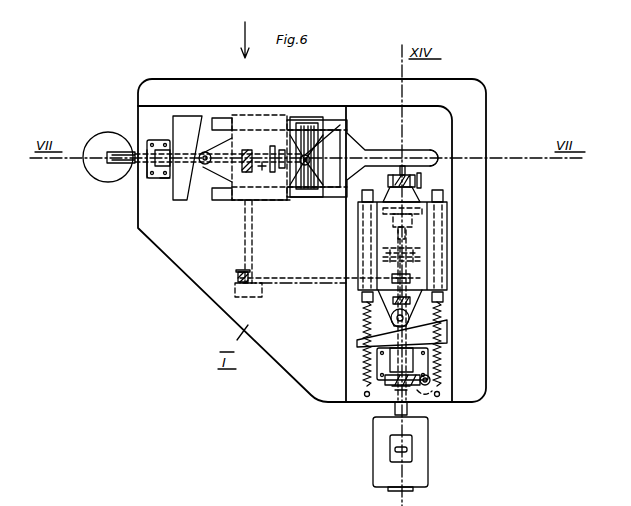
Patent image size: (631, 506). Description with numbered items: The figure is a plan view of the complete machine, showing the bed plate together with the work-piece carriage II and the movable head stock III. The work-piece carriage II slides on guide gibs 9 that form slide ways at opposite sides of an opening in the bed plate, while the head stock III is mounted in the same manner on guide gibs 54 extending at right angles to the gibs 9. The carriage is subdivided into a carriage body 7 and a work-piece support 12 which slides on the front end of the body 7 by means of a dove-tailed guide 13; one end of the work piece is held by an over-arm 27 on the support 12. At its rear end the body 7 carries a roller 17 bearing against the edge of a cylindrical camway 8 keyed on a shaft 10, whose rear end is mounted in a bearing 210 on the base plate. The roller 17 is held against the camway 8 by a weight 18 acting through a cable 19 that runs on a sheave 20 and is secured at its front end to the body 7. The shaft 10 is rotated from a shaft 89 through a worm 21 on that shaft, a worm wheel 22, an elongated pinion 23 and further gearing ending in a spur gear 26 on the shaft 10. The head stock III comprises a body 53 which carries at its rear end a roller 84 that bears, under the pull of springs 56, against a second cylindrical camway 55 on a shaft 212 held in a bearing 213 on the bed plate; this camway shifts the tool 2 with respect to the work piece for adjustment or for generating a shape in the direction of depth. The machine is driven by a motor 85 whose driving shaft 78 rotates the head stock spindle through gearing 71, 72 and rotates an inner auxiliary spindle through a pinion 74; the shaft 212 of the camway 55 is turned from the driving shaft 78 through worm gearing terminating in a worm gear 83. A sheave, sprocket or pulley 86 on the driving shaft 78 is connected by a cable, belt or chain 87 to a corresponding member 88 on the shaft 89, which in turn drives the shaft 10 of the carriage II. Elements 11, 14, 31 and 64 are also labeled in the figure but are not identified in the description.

The tool 2 is at (406, 172).
The carriage body 7 is at (275, 200).
The cylindrical camway 8 is at (187, 202).
The guide gibs 9 is at (227, 202).
The shaft 10 is at (142, 153).
The clamping jaw 11 is at (308, 120).
The work-piece support 12 is at (338, 140).
The dove-tailed guide 13 is at (295, 117).
The pivot 14 is at (304, 200).
The roller 17 is at (207, 150).
The weight 18 is at (110, 182).
The cable 19 is at (144, 180).
The sheave 20 is at (132, 152).
The worm 21 is at (247, 152).
The worm wheel 22 is at (272, 150).
The elongated pinion 23 is at (262, 166).
The spur gear 26 is at (283, 205).
The over-arm 27 is at (431, 162).
The pivot pin 31 is at (306, 155).
The head stock body 53 is at (422, 271).
The guide gibs 54 is at (361, 198).
The second cylindrical camway 55 is at (448, 327).
The springs 56 is at (363, 379).
The clamp 64 is at (418, 180).
The gearing 71 is at (422, 258).
The gearing 72 is at (401, 256).
The pinion 74 is at (410, 223).
The driving shaft 78 is at (407, 245).
The worm gear 83 is at (397, 386).
The roller 84 is at (360, 329).
The motor 85 is at (424, 428).
The sheave, sprocket or pulley 86 is at (410, 283).
The cable, belt or chain 87 is at (445, 388).
The corresponding member 88 is at (252, 275).
The shaft 89 is at (247, 271).
The bearing 210 is at (165, 180).
The shaft 212 is at (429, 358).
The bearing 213 is at (377, 360).
The work-piece carriage II is at (269, 112).
The movable head stock III is at (428, 240).